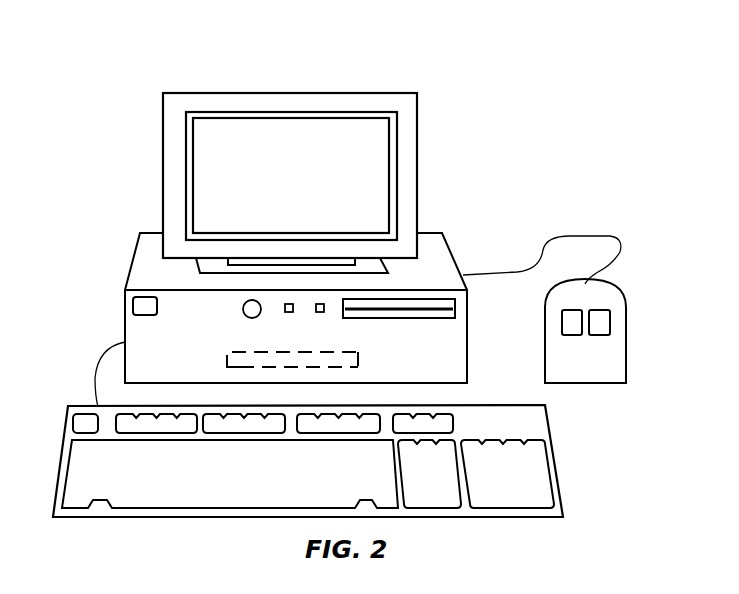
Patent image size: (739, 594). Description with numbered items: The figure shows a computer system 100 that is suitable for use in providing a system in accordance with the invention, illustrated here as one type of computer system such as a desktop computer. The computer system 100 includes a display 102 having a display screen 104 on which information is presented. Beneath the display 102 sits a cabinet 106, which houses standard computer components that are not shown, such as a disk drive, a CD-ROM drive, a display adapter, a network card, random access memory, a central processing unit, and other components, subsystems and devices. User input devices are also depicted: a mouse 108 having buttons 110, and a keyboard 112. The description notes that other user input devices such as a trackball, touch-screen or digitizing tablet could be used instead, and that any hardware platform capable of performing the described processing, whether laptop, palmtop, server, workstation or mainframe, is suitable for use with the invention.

The computer system 100 is at (532, 77).
The display 102 is at (418, 162).
The display screen 104 is at (355, 136).
The cabinet 106 is at (435, 260).
The mouse 108 is at (603, 350).
The buttons 110 is at (575, 309).
The keyboard 112 is at (222, 518).